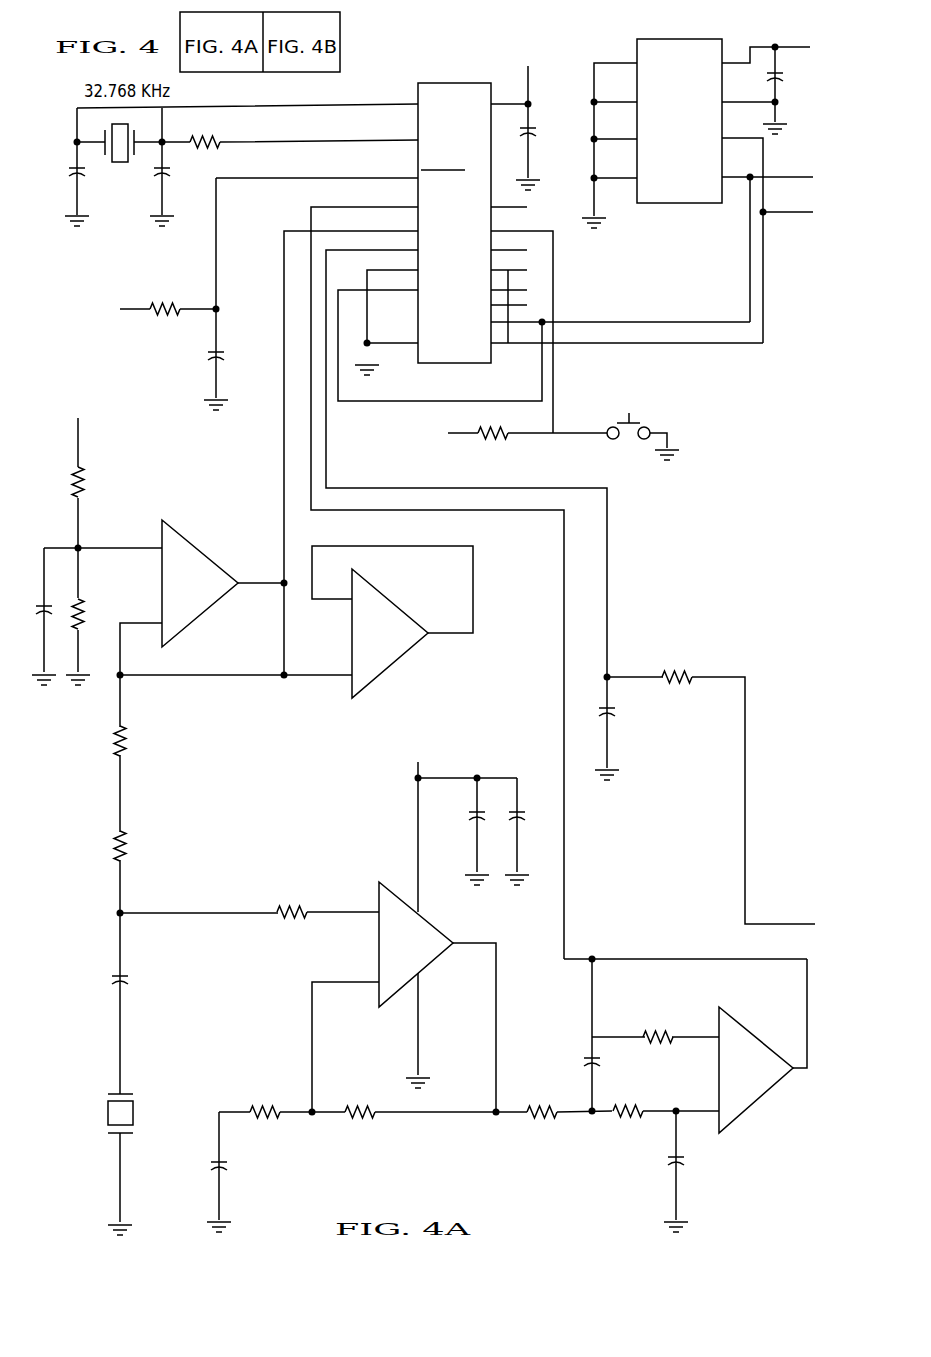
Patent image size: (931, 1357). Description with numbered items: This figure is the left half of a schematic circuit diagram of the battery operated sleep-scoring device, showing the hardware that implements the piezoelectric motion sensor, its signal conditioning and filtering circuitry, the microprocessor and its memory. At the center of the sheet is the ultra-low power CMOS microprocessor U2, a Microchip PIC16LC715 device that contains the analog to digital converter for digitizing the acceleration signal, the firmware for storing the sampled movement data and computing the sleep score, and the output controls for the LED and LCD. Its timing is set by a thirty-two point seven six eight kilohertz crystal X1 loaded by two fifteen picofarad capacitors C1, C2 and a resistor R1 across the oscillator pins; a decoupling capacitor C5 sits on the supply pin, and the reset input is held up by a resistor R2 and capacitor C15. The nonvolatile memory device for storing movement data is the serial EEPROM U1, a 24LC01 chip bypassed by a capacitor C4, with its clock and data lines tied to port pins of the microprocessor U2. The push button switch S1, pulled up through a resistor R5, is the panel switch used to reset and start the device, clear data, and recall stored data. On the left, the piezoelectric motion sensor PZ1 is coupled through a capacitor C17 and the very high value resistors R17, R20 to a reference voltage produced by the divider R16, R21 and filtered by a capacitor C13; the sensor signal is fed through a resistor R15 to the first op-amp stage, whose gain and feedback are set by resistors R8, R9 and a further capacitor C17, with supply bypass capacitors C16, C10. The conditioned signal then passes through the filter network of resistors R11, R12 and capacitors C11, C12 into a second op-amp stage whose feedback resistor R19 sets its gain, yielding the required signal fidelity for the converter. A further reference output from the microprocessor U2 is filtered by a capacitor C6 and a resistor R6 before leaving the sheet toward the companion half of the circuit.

The 32.768 KHz crystal X1 is at (120, 139).
The 15pF capacitor C1 is at (63, 195).
The 15pF capacitor C2 is at (175, 195).
The 330K resistor R1 is at (290, 142).
The PIC16LC715/SO microcontroller U2 is at (489, 508).
The .01 capacitor C5 is at (529, 116).
The 24LC01 EEPROM U1 is at (697, 178).
The .01 capacitor C4 is at (767, 97).
The 10k resistor R2 is at (149, 310).
The .1 capacitor C15 is at (228, 294).
The 10k resistor R5 is at (506, 435).
The pushbutton switch S1 is at (637, 427).
The 470k resistor R16 is at (90, 473).
The 470k resistor R21 is at (95, 615).
The .01 capacitor C13 is at (86, 616).
The .01 capacitor C6 is at (617, 727).
The 10k resistor R6 is at (711, 788).
The 22M resistor R20 is at (140, 753).
The 22M resistor R17 is at (140, 874).
The capacitor C17 is at (183, 1072).
The piezoelectric sensor PZ1 is at (138, 1164).
The 100k resistor R15 is at (249, 914).
The 22 capacitor C16 is at (459, 813).
The .01 capacitor C10 is at (532, 831).
The 220K resistor R8 is at (282, 1115).
The 4.7M resistor R9 is at (433, 1115).
The 330K resistor R11 is at (568, 1115).
The 330K resistor R12 is at (665, 1115).
The .027 capacitor C11 is at (688, 1171).
The .1 capacitor C12 is at (680, 1034).
The 680K resistor R19 is at (655, 1040).